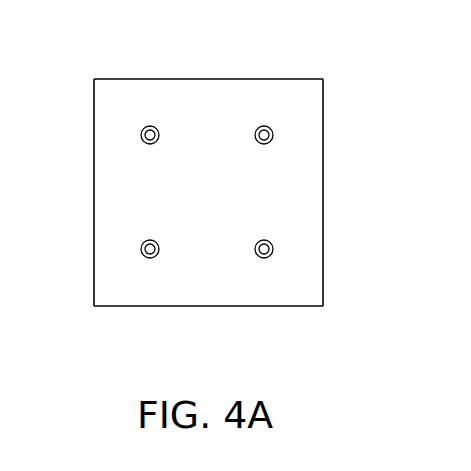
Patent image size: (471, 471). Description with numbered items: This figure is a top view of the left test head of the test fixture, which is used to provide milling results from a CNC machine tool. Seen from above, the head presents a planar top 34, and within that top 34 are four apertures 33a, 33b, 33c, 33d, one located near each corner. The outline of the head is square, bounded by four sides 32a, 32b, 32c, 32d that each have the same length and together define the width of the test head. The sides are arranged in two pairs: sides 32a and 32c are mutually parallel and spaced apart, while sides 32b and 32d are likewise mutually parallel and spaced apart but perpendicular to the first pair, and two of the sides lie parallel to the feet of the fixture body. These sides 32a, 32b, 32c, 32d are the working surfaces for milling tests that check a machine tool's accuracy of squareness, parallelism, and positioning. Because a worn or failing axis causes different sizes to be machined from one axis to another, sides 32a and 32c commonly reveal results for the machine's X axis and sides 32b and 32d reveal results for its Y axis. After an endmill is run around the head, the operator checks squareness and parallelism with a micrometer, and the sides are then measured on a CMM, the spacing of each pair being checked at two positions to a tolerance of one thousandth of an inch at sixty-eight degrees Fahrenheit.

The side of test head 32a is at (93, 191).
The side of test head 32b is at (206, 78).
The side of test head 32c is at (324, 191).
The side of test head 32d is at (206, 307).
The aperture 33a is at (138, 135).
The aperture 33b is at (276, 135).
The aperture 33c is at (138, 249).
The aperture 33d is at (276, 249).
The top of test head 34 is at (210, 143).